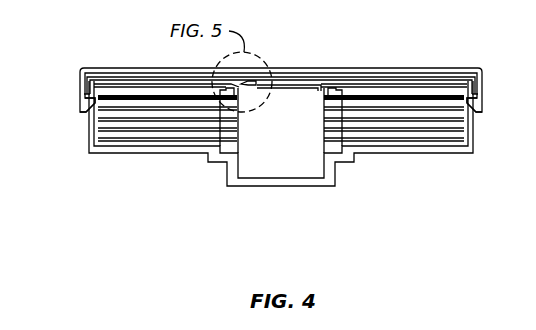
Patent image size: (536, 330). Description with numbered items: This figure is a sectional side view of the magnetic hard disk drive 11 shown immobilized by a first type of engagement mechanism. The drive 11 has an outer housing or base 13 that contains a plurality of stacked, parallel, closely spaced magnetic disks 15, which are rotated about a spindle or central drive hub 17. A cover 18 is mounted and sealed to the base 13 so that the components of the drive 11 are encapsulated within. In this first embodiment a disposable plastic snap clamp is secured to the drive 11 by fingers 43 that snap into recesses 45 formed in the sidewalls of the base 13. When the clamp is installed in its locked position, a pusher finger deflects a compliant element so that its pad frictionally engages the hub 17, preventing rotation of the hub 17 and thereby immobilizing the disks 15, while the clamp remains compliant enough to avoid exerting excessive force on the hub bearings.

The magnetic hard disk drive 11 is at (84, 34).
The base 13 is at (88, 149).
The magnetic disks 15 is at (402, 96).
The central drive hub 17 is at (298, 86).
The cover 18 is at (351, 80).
The fingers 43 is at (80, 108).
The recesses 45 is at (88, 105).